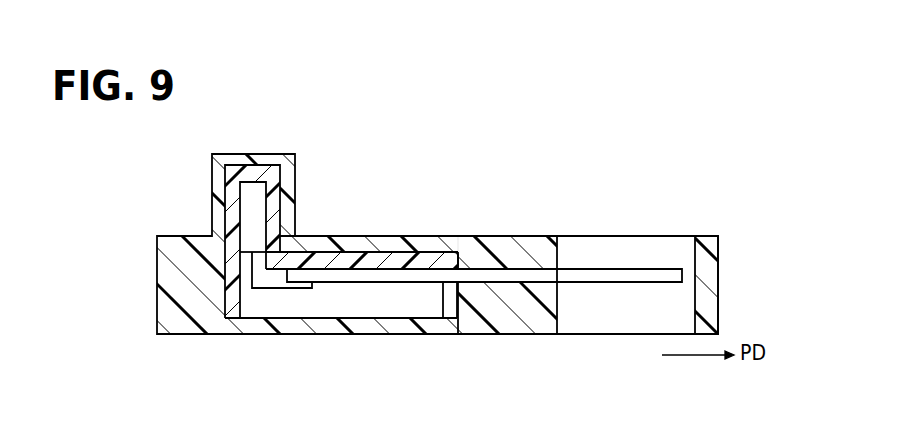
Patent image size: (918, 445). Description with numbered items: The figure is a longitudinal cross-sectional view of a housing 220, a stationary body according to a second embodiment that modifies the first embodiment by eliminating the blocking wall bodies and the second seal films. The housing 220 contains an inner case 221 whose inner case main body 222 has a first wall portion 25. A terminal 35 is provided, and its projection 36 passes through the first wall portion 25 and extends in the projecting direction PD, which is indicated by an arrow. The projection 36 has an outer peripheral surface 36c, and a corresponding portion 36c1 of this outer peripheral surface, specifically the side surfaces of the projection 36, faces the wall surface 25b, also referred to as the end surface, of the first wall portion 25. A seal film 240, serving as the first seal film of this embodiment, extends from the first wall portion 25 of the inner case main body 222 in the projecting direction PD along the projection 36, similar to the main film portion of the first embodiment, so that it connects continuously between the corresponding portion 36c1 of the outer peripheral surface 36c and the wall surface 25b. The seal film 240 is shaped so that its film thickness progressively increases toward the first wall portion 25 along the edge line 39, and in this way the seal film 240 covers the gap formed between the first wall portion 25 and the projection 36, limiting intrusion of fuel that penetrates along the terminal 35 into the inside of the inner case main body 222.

The inner case main body 222 is at (383, 236).
The inner case 221 is at (430, 252).
The edge line 39 is at (463, 265).
The corresponding portion of the outer peripheral surface 36c1 is at (471, 268).
The projection 36 is at (550, 276).
The housing 220 is at (711, 236).
The terminal 35 is at (362, 284).
The outer peripheral surface 36c is at (408, 288).
The first wall portion 25 is at (452, 293).
The wall surface 25b is at (459, 290).
The seal film 240 is at (462, 287).